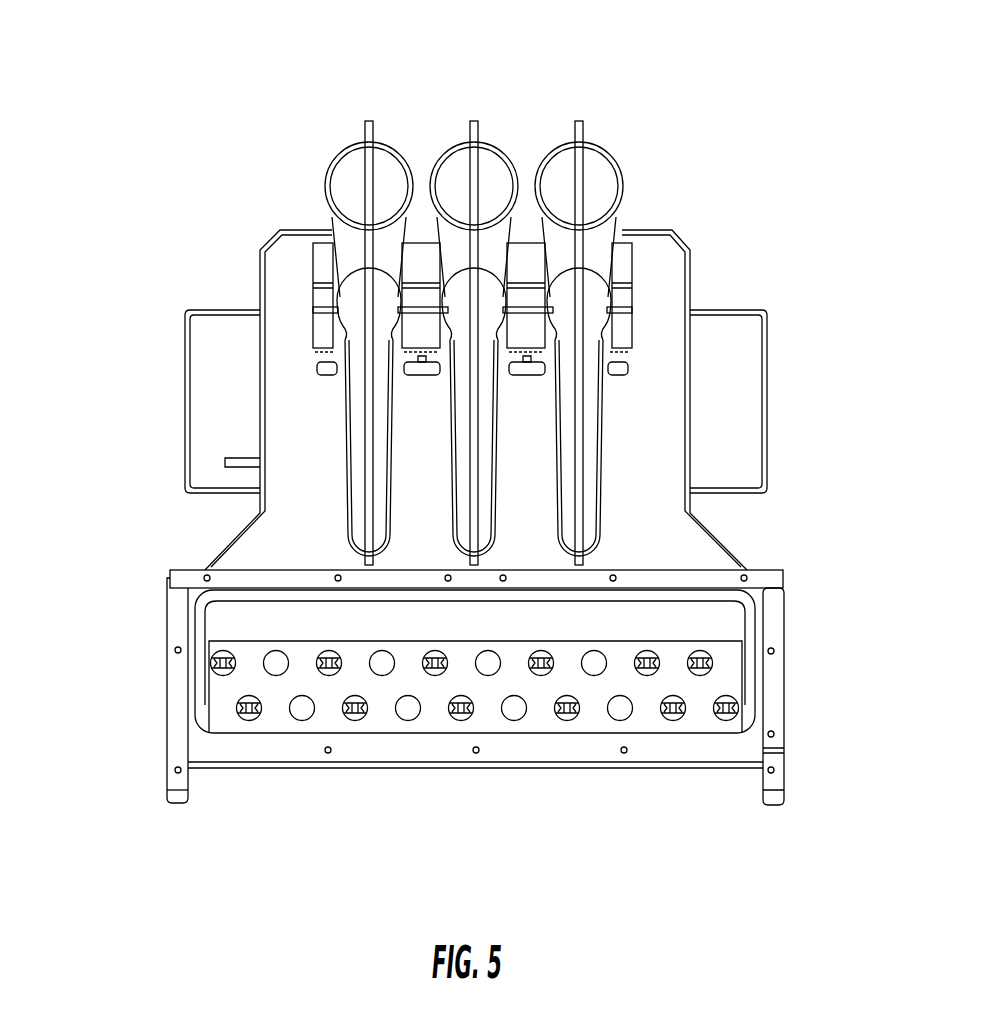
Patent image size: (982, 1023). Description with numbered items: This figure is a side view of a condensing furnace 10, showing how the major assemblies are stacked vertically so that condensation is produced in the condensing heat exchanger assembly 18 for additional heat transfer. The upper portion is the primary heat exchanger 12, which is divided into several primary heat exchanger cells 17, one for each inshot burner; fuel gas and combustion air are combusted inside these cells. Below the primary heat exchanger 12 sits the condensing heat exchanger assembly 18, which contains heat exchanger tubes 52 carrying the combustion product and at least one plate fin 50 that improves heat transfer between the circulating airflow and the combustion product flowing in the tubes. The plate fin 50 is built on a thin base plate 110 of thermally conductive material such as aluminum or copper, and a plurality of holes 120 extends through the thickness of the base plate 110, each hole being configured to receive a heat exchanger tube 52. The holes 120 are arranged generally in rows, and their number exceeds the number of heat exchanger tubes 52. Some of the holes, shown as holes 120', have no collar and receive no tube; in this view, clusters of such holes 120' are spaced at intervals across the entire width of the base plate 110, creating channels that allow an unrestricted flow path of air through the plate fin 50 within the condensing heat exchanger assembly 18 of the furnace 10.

The condensing furnace 10 is at (145, 85).
The primary heat exchanger 12 is at (703, 167).
The primary heat exchanger cell 17 is at (597, 260).
The condensing heat exchanger assembly 18 is at (755, 840).
The plate fin 50 is at (250, 620).
The heat exchanger tube 52 is at (436, 667).
The base plate 110 is at (228, 690).
The holes 120 is at (475, 766).
The holes without collars 120' is at (448, 763).